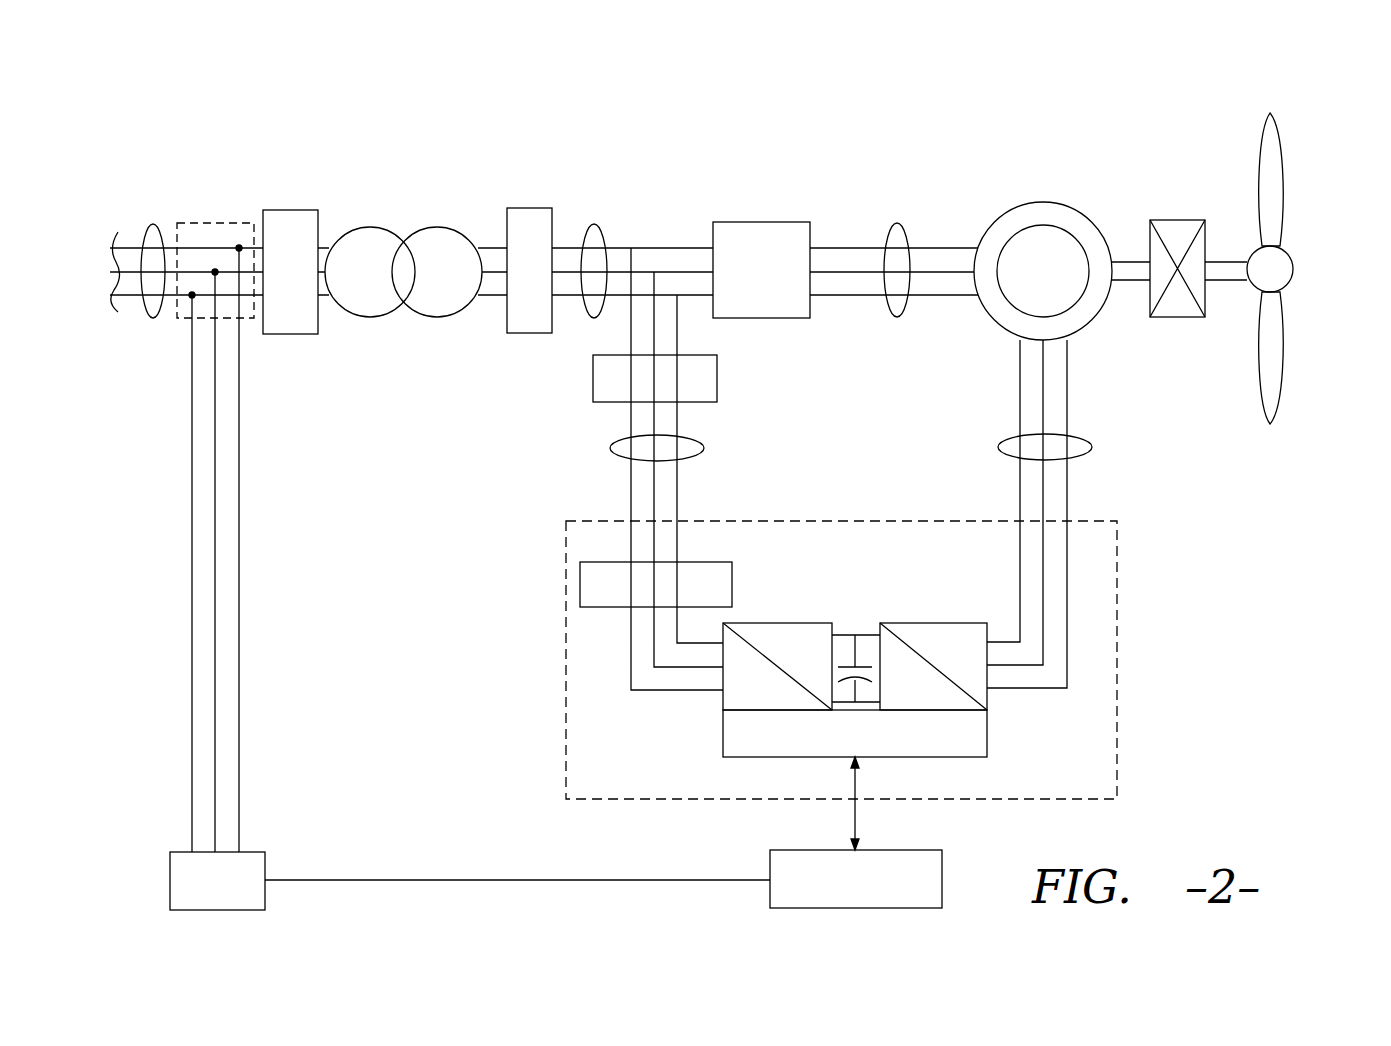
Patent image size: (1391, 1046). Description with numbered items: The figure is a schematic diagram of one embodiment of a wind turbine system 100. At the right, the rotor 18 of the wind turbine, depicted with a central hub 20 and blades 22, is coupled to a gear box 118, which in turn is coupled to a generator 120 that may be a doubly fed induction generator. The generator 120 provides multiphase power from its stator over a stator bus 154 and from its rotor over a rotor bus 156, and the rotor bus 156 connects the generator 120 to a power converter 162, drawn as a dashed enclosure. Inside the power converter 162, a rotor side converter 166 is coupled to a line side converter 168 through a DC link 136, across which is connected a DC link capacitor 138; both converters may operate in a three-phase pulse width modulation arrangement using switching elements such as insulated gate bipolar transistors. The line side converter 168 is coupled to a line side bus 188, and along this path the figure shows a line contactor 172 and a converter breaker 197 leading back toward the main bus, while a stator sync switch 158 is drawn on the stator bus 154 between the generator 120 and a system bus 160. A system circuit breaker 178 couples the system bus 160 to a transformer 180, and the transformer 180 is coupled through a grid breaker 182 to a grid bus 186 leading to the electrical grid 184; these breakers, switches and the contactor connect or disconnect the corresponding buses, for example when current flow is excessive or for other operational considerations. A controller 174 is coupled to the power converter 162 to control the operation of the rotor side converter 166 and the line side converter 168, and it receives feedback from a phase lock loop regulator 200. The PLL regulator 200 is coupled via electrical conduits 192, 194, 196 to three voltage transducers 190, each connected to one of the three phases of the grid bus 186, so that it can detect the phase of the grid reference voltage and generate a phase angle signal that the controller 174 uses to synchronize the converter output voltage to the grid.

The wind turbine system 100 is at (366, 150).
The rotor 18 is at (1322, 170).
The rotor hub 20 is at (1296, 262).
The rotor blades 22 is at (1283, 193).
The gear box 118 is at (1180, 220).
The generator 120 is at (1045, 202).
The DC link 136 is at (866, 632).
The DC link capacitor 138 is at (838, 650).
The stator bus 154 is at (898, 223).
The rotor bus 156 is at (1087, 448).
The stator sync switch 158 is at (765, 222).
The system bus 160 is at (596, 225).
The power converter 162 is at (1117, 625).
The rotor side converter 166 is at (989, 712).
The line side converter 168 is at (722, 712).
The line contactor 172 is at (580, 586).
The controller 174 is at (942, 876).
The system circuit breaker 178 is at (530, 208).
The transformer 180 is at (437, 227).
The grid breaker 182 is at (290, 210).
The electrical grid 184 is at (118, 238).
The grid bus 186 is at (157, 224).
The line side bus 188 is at (612, 452).
The voltage transducer 190 is at (222, 222).
The electrical conduit 192 is at (193, 625).
The electrical conduit 194 is at (216, 575).
The electrical conduit 196 is at (240, 520).
The converter breaker 197 is at (593, 382).
The phase lock loop (PLL) regulator 200 is at (265, 863).